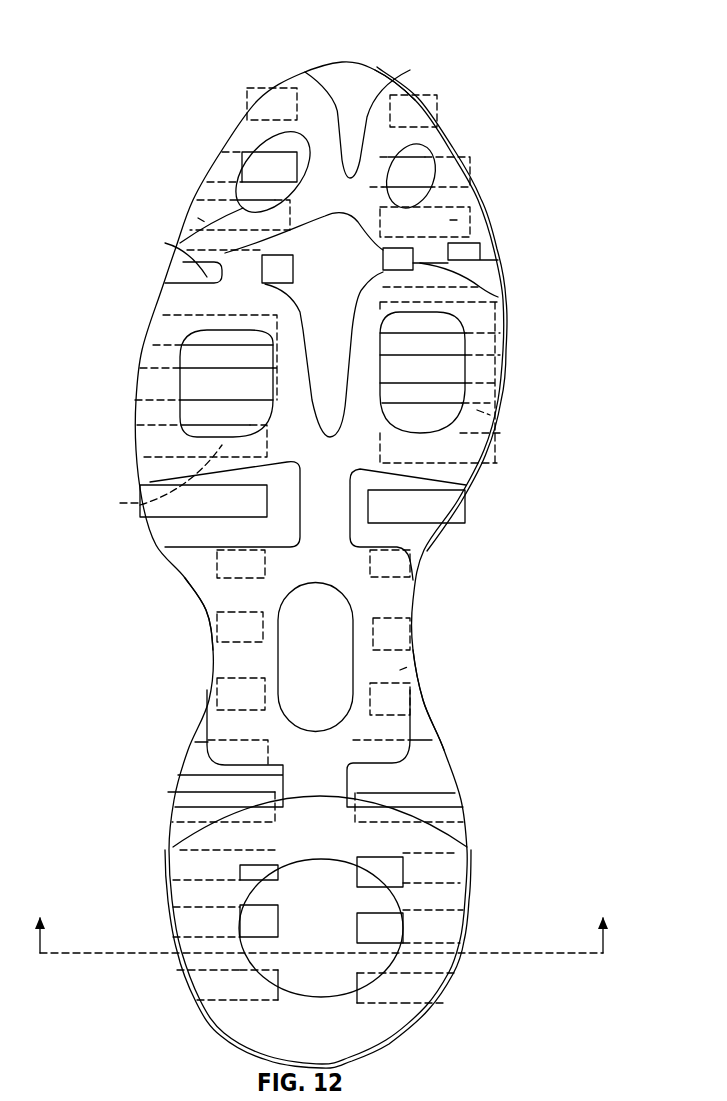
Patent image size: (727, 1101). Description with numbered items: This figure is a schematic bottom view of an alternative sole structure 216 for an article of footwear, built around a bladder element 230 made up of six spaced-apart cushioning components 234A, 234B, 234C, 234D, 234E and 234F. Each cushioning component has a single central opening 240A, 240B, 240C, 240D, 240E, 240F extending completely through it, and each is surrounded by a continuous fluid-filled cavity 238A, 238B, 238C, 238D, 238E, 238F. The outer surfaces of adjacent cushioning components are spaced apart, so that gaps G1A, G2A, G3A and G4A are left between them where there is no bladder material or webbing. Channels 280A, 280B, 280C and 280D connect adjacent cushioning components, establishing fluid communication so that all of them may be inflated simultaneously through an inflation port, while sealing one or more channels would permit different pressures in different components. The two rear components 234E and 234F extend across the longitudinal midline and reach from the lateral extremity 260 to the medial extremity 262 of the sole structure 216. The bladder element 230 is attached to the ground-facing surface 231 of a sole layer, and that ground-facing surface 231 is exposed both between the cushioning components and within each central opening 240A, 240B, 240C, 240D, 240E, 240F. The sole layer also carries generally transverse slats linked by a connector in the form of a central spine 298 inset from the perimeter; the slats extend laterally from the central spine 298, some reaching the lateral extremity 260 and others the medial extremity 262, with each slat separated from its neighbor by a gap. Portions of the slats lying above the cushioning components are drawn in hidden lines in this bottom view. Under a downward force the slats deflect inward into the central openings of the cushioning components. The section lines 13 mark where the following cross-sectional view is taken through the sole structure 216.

The sole structure 216 is at (470, 108).
The bladder element 230 is at (405, 72).
The ground-facing surface 231 is at (277, 185).
The cushioning component 234A is at (443, 147).
The cushioning component 234B is at (248, 140).
The cushioning component 234C is at (487, 322).
The cushioning component 234D is at (293, 290).
The cushioning component 234E is at (410, 607).
The cushioning component 234F is at (197, 840).
The fluid-filled cavity 238A is at (497, 243).
The fluid-filled cavity 238B is at (185, 213).
The fluid-filled cavity 238C is at (512, 432).
The fluid-filled cavity 238D is at (130, 502).
The fluid-filled cavity 238E is at (425, 660).
The fluid-filled cavity 238F is at (470, 893).
The central opening 240A is at (407, 175).
The central opening 240B is at (260, 193).
The central opening 240C is at (430, 363).
The central opening 240D is at (142, 463).
The central opening 240E is at (343, 663).
The central opening 240F is at (350, 903).
The lateral extremity 260 is at (195, 597).
The medial extremity 262 is at (425, 725).
The channel 280A is at (413, 277).
The channel 280B is at (240, 277).
The channel 280C is at (330, 500).
The channel 280D is at (320, 797).
The central spine 298 is at (238, 355).
The gap G1A is at (323, 277).
The gap G2A is at (430, 517).
The gap G3A is at (190, 807).
The gap G4A is at (347, 97).
The section lines 13 is at (321, 917).